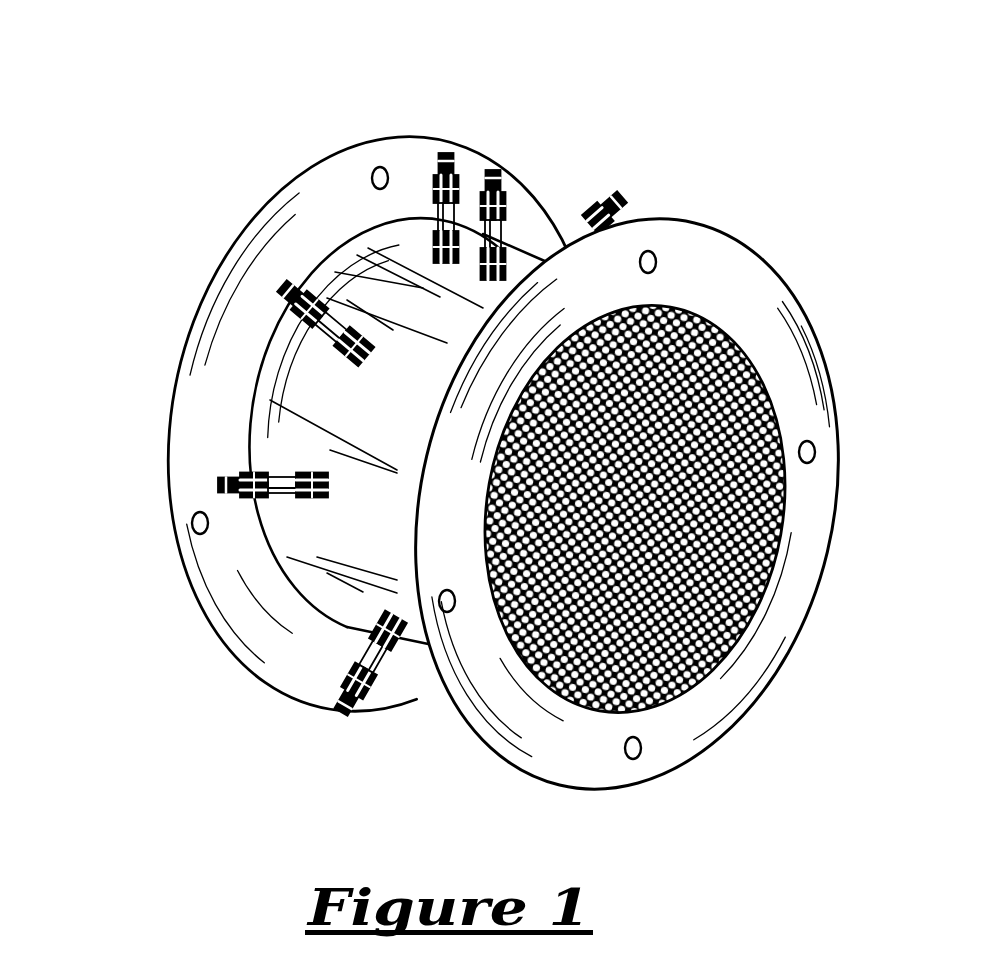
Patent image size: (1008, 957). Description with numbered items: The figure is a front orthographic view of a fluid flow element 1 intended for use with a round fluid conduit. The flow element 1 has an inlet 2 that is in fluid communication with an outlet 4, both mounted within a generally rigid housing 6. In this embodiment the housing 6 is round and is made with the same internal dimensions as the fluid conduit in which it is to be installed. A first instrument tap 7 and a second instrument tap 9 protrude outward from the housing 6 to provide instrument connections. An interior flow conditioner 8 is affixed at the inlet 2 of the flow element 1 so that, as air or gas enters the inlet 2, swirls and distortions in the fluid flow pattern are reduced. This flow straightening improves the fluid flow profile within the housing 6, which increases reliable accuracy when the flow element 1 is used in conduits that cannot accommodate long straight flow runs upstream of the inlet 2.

The fluid flow element 1 is at (465, 417).
The inlet 2 is at (690, 727).
The outlet 4 is at (278, 198).
The housing 6 is at (307, 393).
The first instrument tap 7 is at (497, 165).
The interior flow conditioner 8 is at (720, 548).
The second instrument tap 9 is at (449, 158).